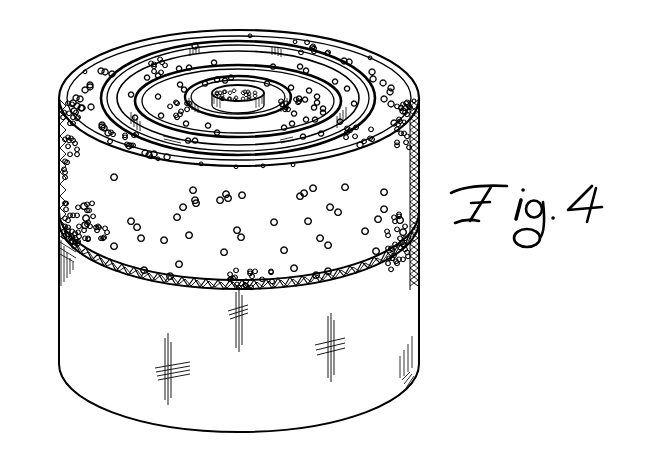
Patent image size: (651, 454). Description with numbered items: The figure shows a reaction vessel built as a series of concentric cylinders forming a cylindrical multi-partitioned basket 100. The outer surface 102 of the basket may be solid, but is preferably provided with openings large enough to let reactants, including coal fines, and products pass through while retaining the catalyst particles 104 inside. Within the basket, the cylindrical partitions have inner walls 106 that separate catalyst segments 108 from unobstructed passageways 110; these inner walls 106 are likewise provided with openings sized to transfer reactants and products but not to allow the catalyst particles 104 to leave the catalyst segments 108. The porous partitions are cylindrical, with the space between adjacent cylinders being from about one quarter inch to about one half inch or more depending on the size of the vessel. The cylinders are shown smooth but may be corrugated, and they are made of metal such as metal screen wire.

The multi-partitioned basket 100 is at (423, 100).
The outer surface 102 is at (420, 154).
The catalyst particles 104 is at (353, 60).
The inner walls 106 is at (136, 78).
The catalyst segments 108 is at (253, 38).
The unobstructed passageways 110 is at (319, 67).